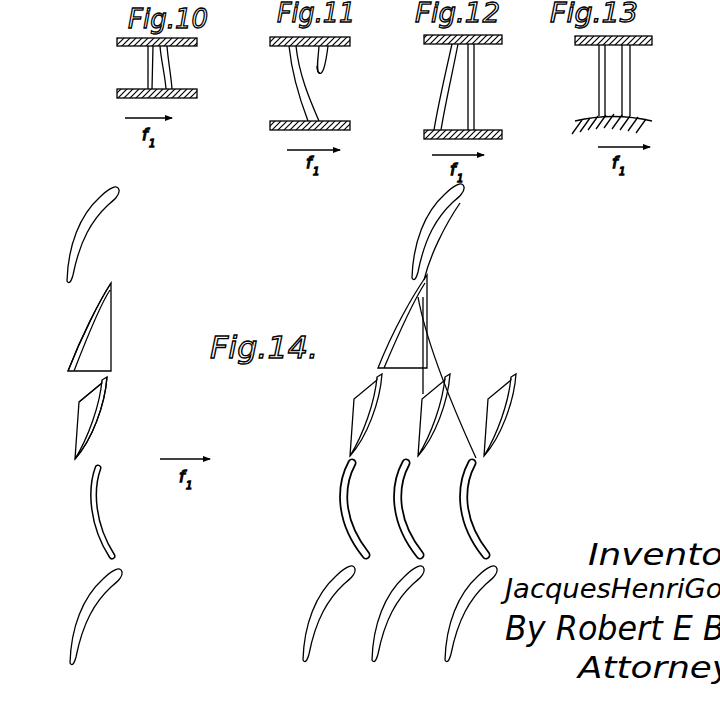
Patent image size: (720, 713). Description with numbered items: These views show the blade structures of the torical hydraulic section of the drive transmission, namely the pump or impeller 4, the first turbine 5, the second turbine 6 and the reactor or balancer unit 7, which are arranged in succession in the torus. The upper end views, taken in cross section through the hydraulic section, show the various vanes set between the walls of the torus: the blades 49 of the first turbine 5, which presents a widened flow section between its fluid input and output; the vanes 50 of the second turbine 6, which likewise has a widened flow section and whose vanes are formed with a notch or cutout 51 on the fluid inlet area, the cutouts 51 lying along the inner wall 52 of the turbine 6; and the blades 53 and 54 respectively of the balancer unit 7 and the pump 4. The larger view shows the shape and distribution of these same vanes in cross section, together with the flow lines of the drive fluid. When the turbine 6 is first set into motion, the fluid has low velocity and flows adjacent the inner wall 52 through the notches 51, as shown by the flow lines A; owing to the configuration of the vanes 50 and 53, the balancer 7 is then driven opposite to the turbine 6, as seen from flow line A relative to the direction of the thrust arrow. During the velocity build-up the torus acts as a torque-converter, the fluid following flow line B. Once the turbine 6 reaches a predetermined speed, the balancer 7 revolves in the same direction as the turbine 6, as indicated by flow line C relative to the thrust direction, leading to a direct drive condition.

In FIG. 14, the pump or impeller 4 is at (98, 206).
In FIG. 14, the first turbine 5 is at (104, 327).
In FIG. 14, the second turbine 6 is at (80, 418).
In FIG. 14, the reactor or balancer unit 7 is at (92, 480).
In FIG. 10, the blades of turbine 49 is at (165, 68).
In FIG. 11, the blades of turbine 49 is at (294, 82).
In FIG. 14, the blades of turbine 49 is at (90, 347).
In FIG. 11, the vanes of the turbine 50 is at (326, 62).
In FIG. 12, the vanes of the turbine 50 is at (442, 100).
In FIG. 14, the vanes of the turbine 50 is at (100, 418).
In FIG. 11, the notch or cutout 51 is at (317, 72).
In FIG. 14, the notch or cutout 51 is at (98, 393).
In FIG. 11, the inner wall 52 is at (279, 130).
In FIG. 12, the blades of the balancer unit 53 is at (470, 100).
In FIG. 13, the blades of the balancer unit 53 is at (603, 90).
In FIG. 14, the blades of the balancer unit 53 is at (97, 519).
In FIG. 10, the blades of the pump 54 is at (147, 60).
In FIG. 13, the blades of the pump 54 is at (626, 78).
In FIG. 14, the blades of the pump 54 is at (93, 612).
In FIG. 14, the flow lines A is at (476, 517).
In FIG. 14, the flow line B is at (405, 505).
In FIG. 14, the flow line C is at (338, 504).